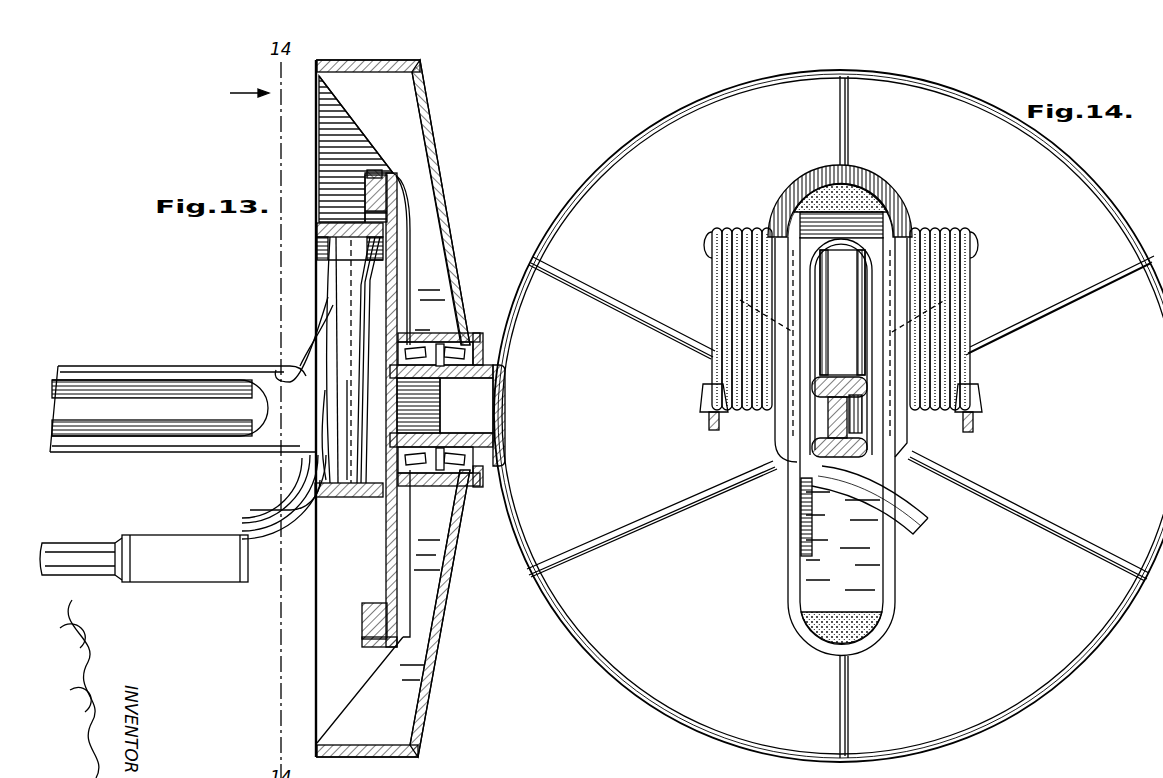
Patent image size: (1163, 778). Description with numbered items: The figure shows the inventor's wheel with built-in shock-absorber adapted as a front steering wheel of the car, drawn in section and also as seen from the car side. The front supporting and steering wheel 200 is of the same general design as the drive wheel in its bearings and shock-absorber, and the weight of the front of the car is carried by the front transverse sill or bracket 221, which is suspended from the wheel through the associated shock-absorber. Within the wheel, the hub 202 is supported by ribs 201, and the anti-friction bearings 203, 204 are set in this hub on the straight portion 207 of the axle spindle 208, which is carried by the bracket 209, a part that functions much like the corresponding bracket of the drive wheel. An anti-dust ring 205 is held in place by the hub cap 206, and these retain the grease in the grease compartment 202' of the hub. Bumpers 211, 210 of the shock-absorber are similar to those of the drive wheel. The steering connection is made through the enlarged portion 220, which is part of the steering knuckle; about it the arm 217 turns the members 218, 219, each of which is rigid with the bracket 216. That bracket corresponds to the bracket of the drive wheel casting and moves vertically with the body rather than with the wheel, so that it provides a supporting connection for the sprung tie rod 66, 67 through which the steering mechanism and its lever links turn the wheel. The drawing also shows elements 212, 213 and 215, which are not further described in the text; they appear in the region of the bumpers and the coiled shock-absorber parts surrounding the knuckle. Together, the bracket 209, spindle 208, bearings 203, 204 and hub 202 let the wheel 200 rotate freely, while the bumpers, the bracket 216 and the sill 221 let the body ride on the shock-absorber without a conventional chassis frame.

In FIG. 13, the tie rod 66 is at (98, 545).
In FIG. 13, the tie rod 67 is at (170, 537).
In FIG. 13, the steering wheel 200 is at (424, 88).
In FIG. 14, the steering wheel 200 is at (722, 105).
In FIG. 13, the ribs 201 is at (422, 212).
In FIG. 14, the ribs 201 is at (849, 131).
In FIG. 13, the wheel hub 202 is at (449, 313).
In FIG. 13, the grease compartment 202' is at (435, 490).
In FIG. 13, the anti-friction bearing 203 is at (450, 343).
In FIG. 13, the anti-friction bearing 204 is at (480, 336).
In FIG. 13, the anti-dust ring 205 is at (480, 470).
In FIG. 13, the hub cap 206 is at (497, 464).
In FIG. 13, the straight portion 207 is at (456, 448).
In FIG. 13, the axle spindle 208 is at (418, 448).
In FIG. 13, the bracket 209 is at (386, 527).
In FIG. 14, the bracket 209 is at (866, 562).
In FIG. 13, the bumper 210 is at (363, 630).
In FIG. 14, the bumper 210 is at (858, 630).
In FIG. 13, the bumper 211 is at (397, 174).
In FIG. 14, the bumper 211 is at (860, 192).
In FIG. 14, the inner arch 212 is at (888, 198).
In FIG. 14, the coil 213 is at (912, 207).
In FIG. 14, the coil end 215 is at (976, 240).
In FIG. 13, the bracket 216 is at (334, 498).
In FIG. 14, the bracket 216 is at (906, 437).
In FIG. 13, the arm 217 is at (230, 500).
In FIG. 14, the arm 217 is at (923, 519).
In FIG. 13, the member 218 is at (335, 245).
In FIG. 14, the member 218 is at (840, 252).
In FIG. 13, the member 219 is at (320, 472).
In FIG. 14, the member 219 is at (813, 472).
In FIG. 13, the enlarged portion 220 is at (290, 378).
In FIG. 14, the enlarged portion 220 is at (835, 406).
In FIG. 13, the front transverse sill 221 is at (184, 372).
In FIG. 14, the front transverse sill 221 is at (840, 375).